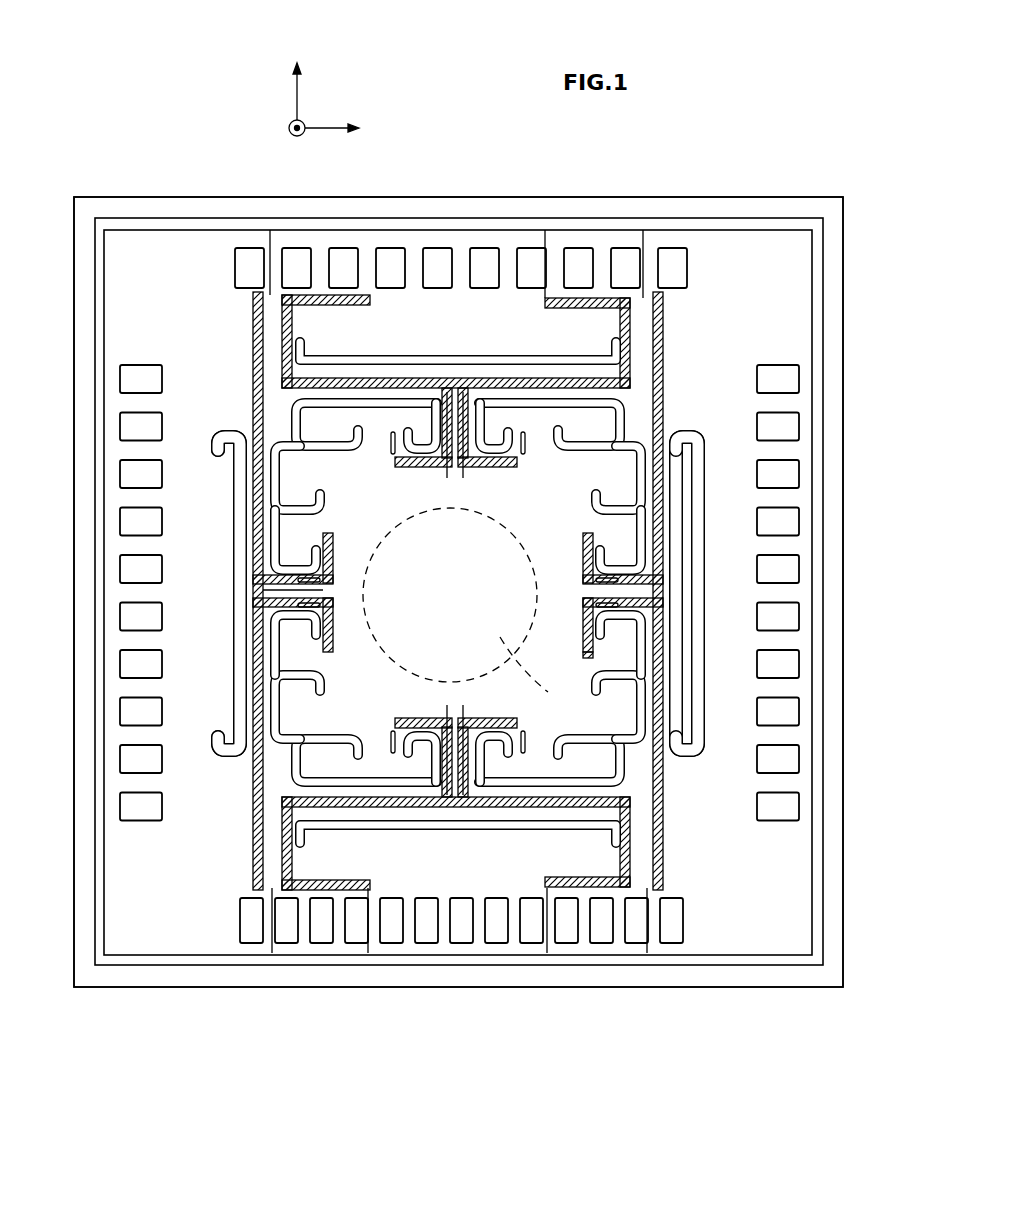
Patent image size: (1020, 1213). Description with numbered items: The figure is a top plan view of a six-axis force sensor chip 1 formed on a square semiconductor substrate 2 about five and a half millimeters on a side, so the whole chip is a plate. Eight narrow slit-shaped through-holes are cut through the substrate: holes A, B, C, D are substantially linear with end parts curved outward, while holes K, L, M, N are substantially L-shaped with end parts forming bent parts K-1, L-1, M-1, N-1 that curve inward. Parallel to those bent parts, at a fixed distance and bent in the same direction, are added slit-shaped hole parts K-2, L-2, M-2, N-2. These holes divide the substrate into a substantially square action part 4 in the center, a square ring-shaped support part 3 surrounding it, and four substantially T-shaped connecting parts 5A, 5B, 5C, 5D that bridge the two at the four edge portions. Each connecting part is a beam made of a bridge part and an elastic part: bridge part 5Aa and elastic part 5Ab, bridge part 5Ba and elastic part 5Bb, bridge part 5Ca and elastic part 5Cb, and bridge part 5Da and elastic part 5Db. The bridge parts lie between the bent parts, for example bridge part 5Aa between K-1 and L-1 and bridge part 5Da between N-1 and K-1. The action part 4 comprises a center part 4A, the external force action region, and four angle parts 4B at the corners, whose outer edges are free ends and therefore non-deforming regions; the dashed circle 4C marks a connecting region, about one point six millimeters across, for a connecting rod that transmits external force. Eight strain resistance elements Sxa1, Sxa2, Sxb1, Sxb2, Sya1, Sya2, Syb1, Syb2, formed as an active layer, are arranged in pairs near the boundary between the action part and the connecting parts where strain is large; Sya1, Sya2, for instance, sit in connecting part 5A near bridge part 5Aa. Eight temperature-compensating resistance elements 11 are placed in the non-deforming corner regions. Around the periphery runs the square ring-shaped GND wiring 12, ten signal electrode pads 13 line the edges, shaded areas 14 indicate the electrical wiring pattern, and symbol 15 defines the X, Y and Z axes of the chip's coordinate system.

The six-axis force sensor chip 1 is at (763, 192).
The semiconductor substrate 2 is at (845, 240).
The support part 3 is at (742, 350).
The action part 4 is at (469, 610).
The center part 4A is at (583, 690).
The angle part 4B is at (273, 447).
The circle 4C is at (583, 660).
The connecting part 5A is at (455, 385).
The bridge part 5Aa is at (447, 470).
The elastic part 5Ab is at (352, 375).
The connecting part 5B is at (663, 595).
The bridge part 5Ba is at (588, 540).
The elastic part 5Bb is at (665, 522).
The connecting part 5C is at (458, 800).
The bridge part 5Ca is at (458, 718).
The elastic part 5Cb is at (335, 812).
The connecting part 5D is at (255, 592).
The bridge part 5Da is at (258, 596).
The elastic part 5Db is at (247, 502).
The temperature-compensating resistance element 11 is at (392, 455).
The GND wiring 12 is at (823, 296).
The signal electrode pad 13 is at (528, 248).
The wiring pattern 14 is at (253, 328).
The three-axis Cartesian coordinate system 15 is at (345, 90).
The through-hole A is at (577, 367).
The through-hole B is at (683, 478).
The through-hole C is at (587, 815).
The through-hole D is at (226, 740).
The through-hole K is at (282, 405).
The bent part K-1 is at (290, 560).
The hole part K-2 is at (378, 428).
The through-hole L is at (635, 410).
The bent part L-1 is at (617, 562).
The hole part L-2 is at (530, 428).
The through-hole M is at (632, 747).
The bent part M-1 is at (625, 625).
The hole part M-2 is at (625, 680).
The through-hole N is at (283, 775).
The bent part N-1 is at (290, 650).
The hole part N-2 is at (290, 760).
The strain resistance element Sxa1 is at (583, 612).
The strain resistance element Sxa2 is at (583, 560).
The strain resistance element Sxb1 is at (330, 580).
The strain resistance element Sxb2 is at (330, 618).
The strain resistance element Sya1 is at (492, 449).
The strain resistance element Sya2 is at (416, 449).
The strain resistance element Syb1 is at (411, 739).
The strain resistance element Syb2 is at (491, 739).